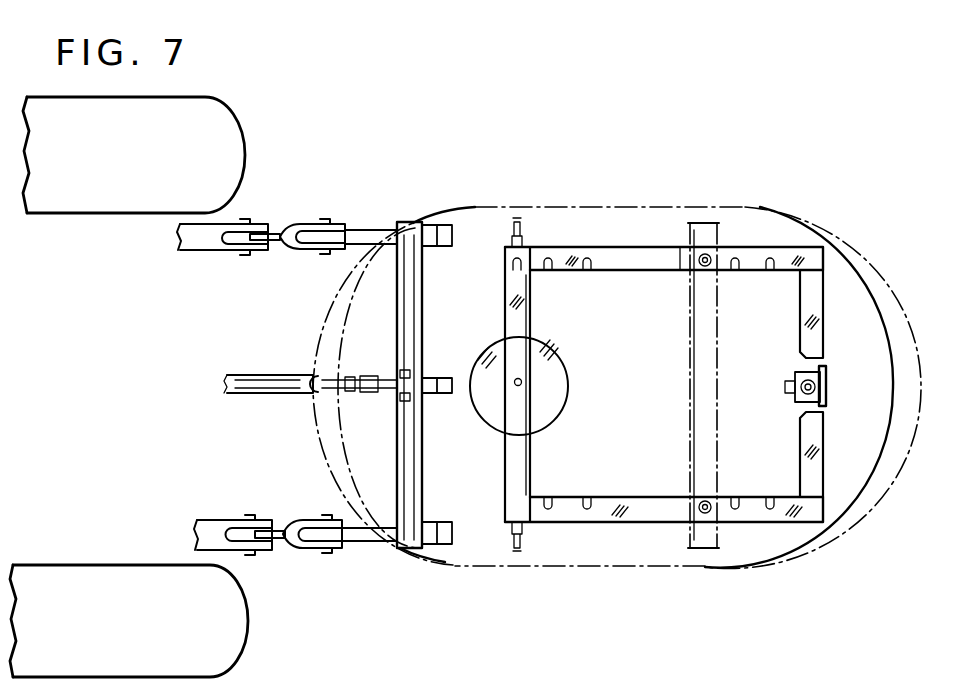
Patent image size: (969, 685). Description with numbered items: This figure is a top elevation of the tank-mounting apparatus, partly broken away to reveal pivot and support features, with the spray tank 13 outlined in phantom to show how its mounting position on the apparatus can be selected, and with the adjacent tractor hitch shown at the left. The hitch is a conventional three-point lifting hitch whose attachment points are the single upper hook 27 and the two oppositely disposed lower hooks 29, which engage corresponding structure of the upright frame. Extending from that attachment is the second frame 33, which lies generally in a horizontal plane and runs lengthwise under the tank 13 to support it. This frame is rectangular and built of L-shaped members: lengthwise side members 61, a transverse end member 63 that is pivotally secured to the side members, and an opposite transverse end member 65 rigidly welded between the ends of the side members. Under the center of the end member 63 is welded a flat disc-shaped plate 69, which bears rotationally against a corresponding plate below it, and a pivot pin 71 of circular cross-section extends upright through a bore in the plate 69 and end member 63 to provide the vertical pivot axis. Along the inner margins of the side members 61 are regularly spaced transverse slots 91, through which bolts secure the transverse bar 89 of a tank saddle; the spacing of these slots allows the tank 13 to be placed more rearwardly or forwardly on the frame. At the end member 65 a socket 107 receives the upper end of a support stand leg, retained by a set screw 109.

The spray tank 13 is at (705, 570).
The upper hook 27 is at (394, 212).
The lower hook 29 is at (440, 522).
The second frame 33 is at (660, 247).
The first lengthwise side member 61 is at (657, 523).
The transverse end member 63 is at (535, 458).
The opposite transverse end member 65 is at (863, 325).
The disc-shaped plate 69 is at (562, 364).
The pivot pin 71 is at (521, 346).
The transverse bar 89 is at (690, 422).
The transverse slots 91 is at (712, 500).
The socket 107 is at (795, 378).
The set screw 109 is at (790, 388).